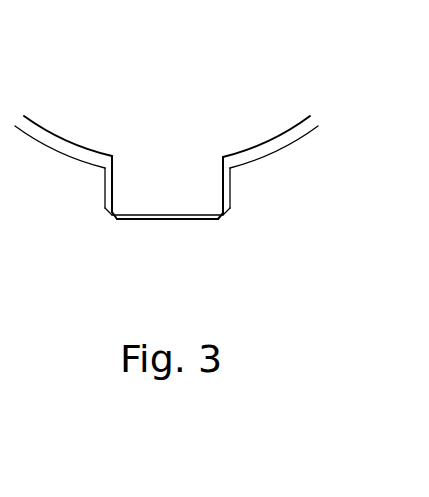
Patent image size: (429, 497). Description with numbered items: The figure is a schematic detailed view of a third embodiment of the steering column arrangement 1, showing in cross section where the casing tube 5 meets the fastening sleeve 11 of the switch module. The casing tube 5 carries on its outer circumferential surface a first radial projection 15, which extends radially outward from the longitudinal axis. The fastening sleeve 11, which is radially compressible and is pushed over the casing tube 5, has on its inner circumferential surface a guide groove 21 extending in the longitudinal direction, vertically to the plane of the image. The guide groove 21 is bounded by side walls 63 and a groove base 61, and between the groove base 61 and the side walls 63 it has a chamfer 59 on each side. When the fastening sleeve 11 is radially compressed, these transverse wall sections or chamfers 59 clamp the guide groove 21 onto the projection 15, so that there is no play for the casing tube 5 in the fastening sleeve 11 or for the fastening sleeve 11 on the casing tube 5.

The steering column arrangement 1 is at (213, 78).
The casing tube 5 is at (308, 117).
The fastening sleeve 11 is at (318, 126).
The first radial projection 15 is at (230, 175).
The side walls 63 is at (105, 187).
The chamfer 59 is at (112, 219).
The groove base 61 is at (143, 221).
The guide groove 21 is at (194, 221).